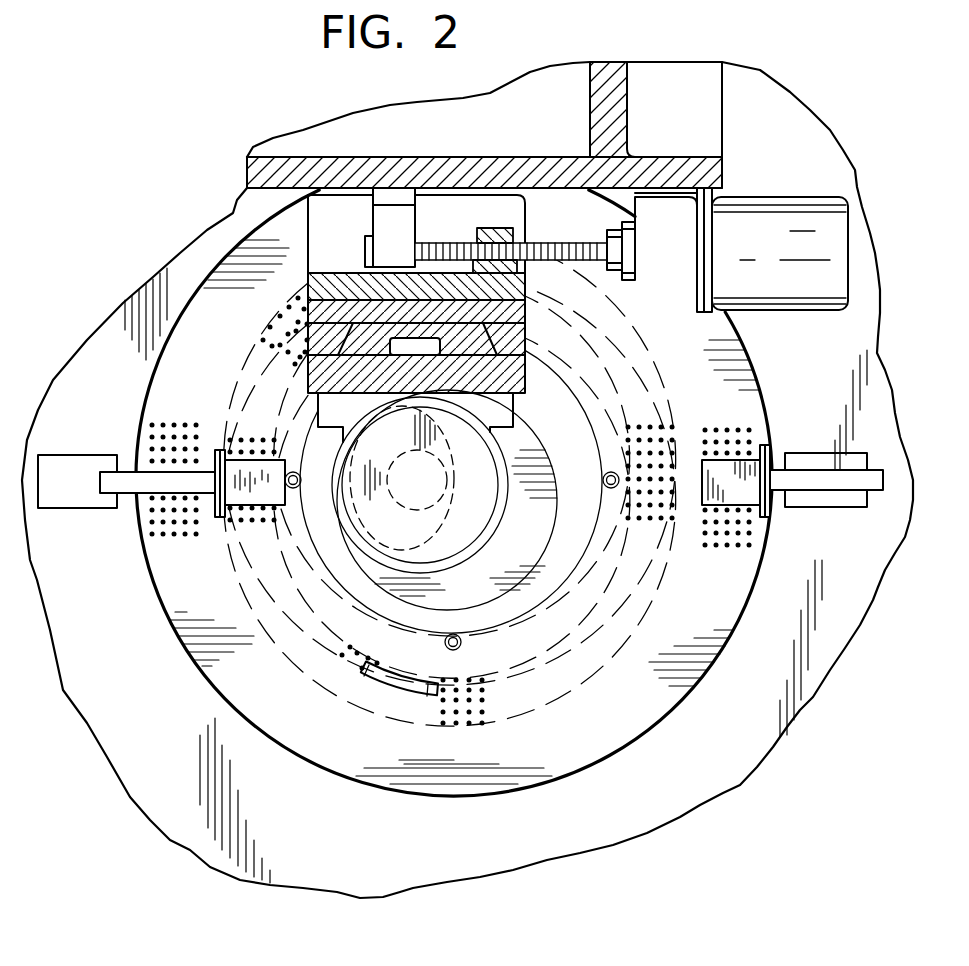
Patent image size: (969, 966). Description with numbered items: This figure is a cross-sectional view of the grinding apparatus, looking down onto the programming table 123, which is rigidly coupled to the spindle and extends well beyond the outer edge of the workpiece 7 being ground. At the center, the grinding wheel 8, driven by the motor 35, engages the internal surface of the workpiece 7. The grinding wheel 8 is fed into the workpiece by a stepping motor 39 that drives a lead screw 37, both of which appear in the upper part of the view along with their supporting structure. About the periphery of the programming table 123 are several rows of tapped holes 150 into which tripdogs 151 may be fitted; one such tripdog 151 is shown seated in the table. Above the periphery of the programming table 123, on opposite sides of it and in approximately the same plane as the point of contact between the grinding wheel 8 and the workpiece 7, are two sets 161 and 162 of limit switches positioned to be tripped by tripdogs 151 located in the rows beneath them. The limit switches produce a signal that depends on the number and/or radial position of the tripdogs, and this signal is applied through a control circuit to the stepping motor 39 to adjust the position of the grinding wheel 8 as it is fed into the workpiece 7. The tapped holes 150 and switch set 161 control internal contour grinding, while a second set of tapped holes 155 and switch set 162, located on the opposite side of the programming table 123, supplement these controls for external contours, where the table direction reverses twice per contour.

The workpiece 7 is at (548, 447).
The grinding wheel 8 is at (427, 527).
The motor 35 is at (362, 522).
The lead screw 37 is at (583, 241).
The stepping motor 39 is at (790, 268).
The programming table 123 is at (694, 672).
The tapped holes 150 is at (470, 700).
The tripdogs 151 is at (410, 672).
The second set of tapped holes 155 is at (168, 538).
The switch set 161 is at (243, 490).
The switch set 162 is at (735, 487).